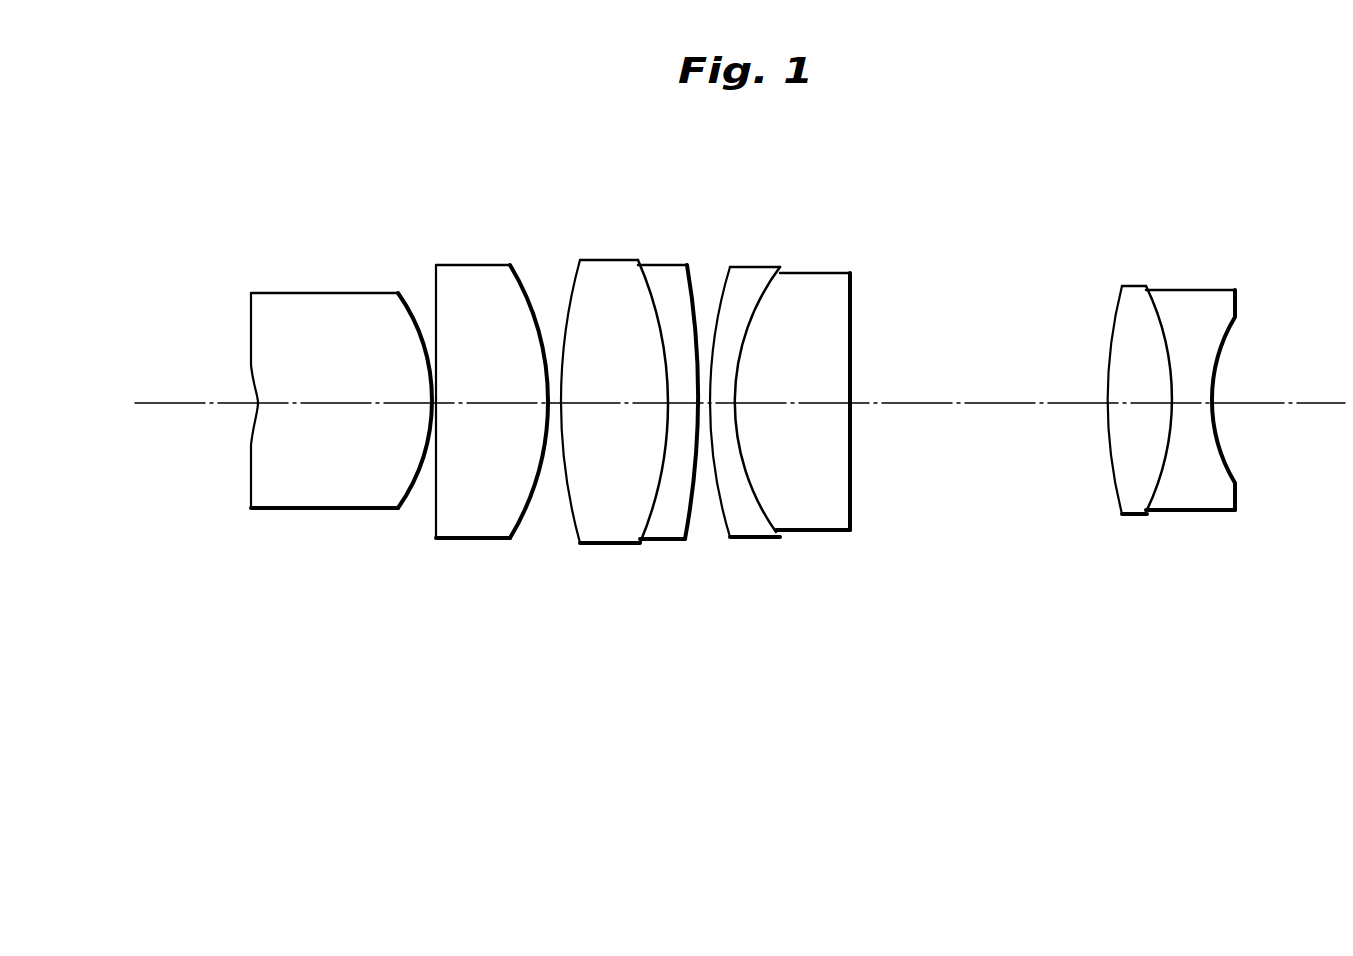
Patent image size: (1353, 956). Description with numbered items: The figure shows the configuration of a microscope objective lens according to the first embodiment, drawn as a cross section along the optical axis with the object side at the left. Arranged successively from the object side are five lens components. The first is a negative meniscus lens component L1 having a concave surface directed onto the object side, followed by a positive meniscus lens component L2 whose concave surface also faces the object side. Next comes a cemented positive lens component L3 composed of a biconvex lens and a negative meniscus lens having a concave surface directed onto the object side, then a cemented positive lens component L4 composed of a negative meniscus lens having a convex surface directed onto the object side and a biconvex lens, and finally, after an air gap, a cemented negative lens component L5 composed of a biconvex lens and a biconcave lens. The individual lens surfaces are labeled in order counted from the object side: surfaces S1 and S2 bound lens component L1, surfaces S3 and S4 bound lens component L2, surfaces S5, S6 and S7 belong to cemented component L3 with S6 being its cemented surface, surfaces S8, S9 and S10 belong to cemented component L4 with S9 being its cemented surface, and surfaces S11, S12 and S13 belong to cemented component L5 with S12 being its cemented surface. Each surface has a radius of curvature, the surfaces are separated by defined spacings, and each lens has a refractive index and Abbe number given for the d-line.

The negative meniscus lens component L1 is at (301, 450).
The positive meniscus lens component L2 is at (471, 458).
The cemented positive lens component L3 is at (628, 456).
The cemented positive lens component L4 is at (812, 459).
The cemented negative lens component L5 is at (1167, 452).
The lens surface S1 is at (250, 481).
The lens surface S2 is at (409, 497).
The lens surface S3 is at (434, 520).
The lens surface S4 is at (524, 520).
The lens surface S5 is at (571, 510).
The lens surface S6 is at (652, 520).
The lens surface S7 is at (690, 515).
The lens surface S8 is at (725, 525).
The lens surface S9 is at (765, 525).
The lens surface S10 is at (848, 510).
The lens surface S11 is at (1112, 470).
The lens surface S12 is at (1152, 487).
The lens surface S13 is at (1233, 470).